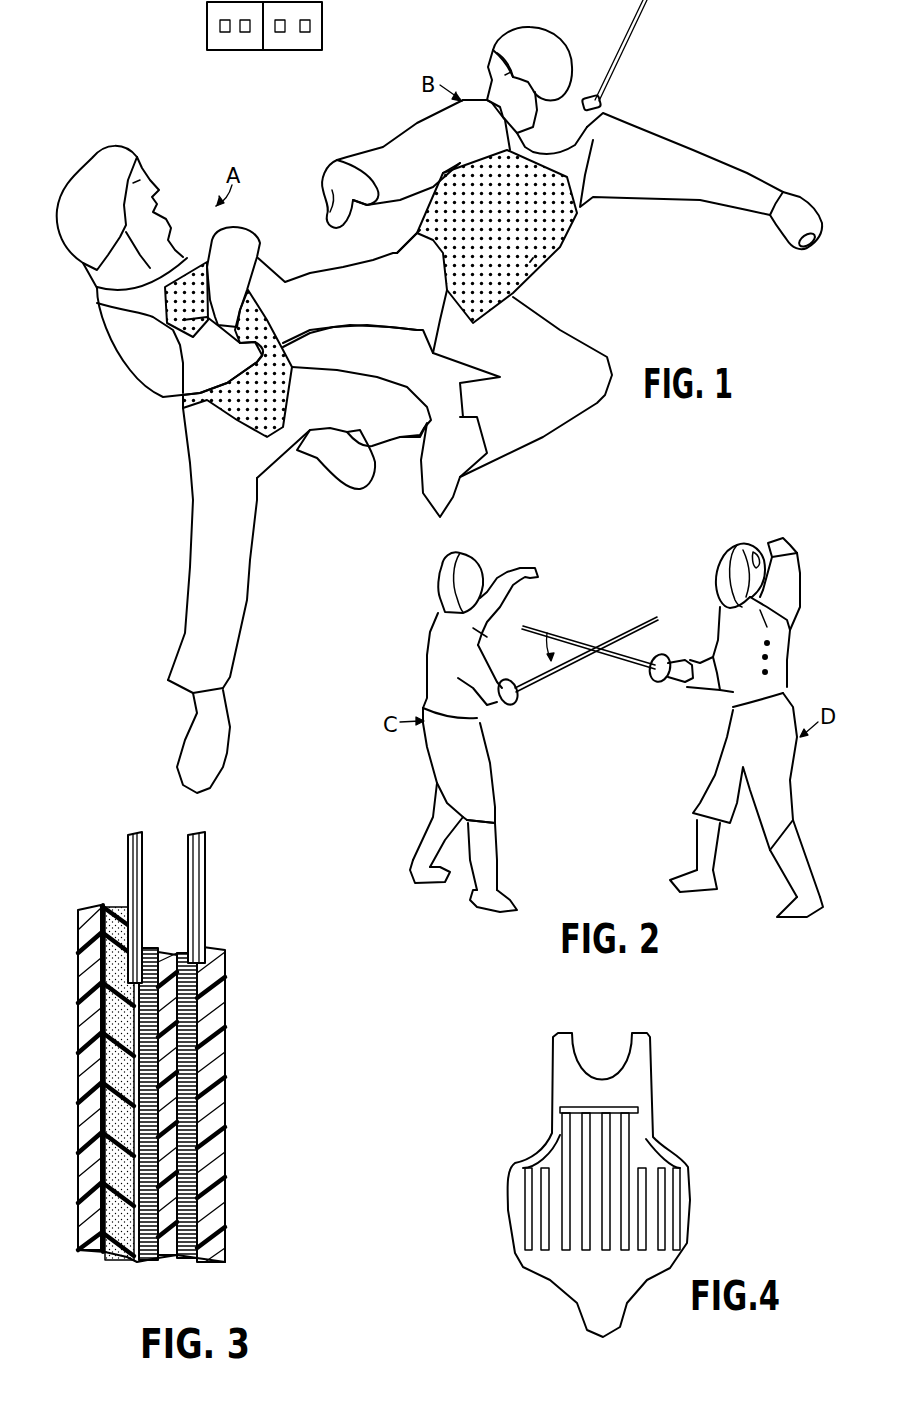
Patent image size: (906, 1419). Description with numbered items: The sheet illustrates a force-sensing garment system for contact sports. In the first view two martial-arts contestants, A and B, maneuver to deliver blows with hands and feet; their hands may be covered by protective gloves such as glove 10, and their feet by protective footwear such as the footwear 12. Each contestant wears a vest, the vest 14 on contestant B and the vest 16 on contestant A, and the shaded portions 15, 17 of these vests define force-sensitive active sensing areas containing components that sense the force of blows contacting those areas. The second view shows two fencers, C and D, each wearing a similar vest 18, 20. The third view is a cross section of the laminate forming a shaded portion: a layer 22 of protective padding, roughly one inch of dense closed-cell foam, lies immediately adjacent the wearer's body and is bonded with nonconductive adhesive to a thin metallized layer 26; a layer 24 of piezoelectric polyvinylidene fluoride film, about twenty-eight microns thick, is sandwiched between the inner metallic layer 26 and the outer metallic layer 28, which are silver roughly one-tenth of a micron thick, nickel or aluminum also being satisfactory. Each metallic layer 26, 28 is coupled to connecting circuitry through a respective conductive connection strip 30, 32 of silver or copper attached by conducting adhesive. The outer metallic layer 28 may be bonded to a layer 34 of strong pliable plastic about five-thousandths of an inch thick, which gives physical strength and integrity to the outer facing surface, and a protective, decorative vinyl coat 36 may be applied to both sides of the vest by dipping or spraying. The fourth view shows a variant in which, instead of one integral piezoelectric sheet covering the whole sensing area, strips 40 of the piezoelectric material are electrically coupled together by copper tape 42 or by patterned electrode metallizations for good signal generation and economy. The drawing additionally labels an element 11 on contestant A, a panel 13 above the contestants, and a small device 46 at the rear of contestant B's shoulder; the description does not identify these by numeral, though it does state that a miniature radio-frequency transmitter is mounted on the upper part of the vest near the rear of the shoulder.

In FIG. 1, the protective gloves 10 is at (340, 162).
In FIG. 1, the hand protector glove 11 is at (212, 238).
In FIG. 1, the protective footwear 12 is at (350, 475).
In FIG. 1, the score display 13 is at (263, 50).
In FIG. 1, the vest 14 is at (560, 245).
In FIG. 1, the shaded portion 15 is at (533, 257).
In FIG. 1, the vest 16 is at (267, 318).
In FIG. 1, the shaded portion 17 is at (193, 323).
In FIG. 2, the vest 18 is at (481, 666).
In FIG. 2, the vest 20 is at (733, 692).
In FIG. 3, the layer of protective padding material 22 is at (108, 1240).
In FIG. 3, the layer of piezoelectric film 24 is at (177, 1248).
In FIG. 3, the metallized layer 26 is at (153, 1256).
In FIG. 3, the metallized layer 28 is at (187, 1252).
In FIG. 3, the conductive connection strip 30 is at (128, 850).
In FIG. 3, the conductive connection strip 32 is at (205, 855).
In FIG. 3, the layer of pliable plastic material 34 is at (197, 1255).
In FIG. 3, the outer protective and decorative coat of vinyl 36 is at (83, 1133).
In FIG. 4, the strips of KYNAR material 40 is at (600, 1123).
In FIG. 4, the copper tape 42 is at (602, 1107).
In FIG. 1, the transmitter 46 is at (600, 97).